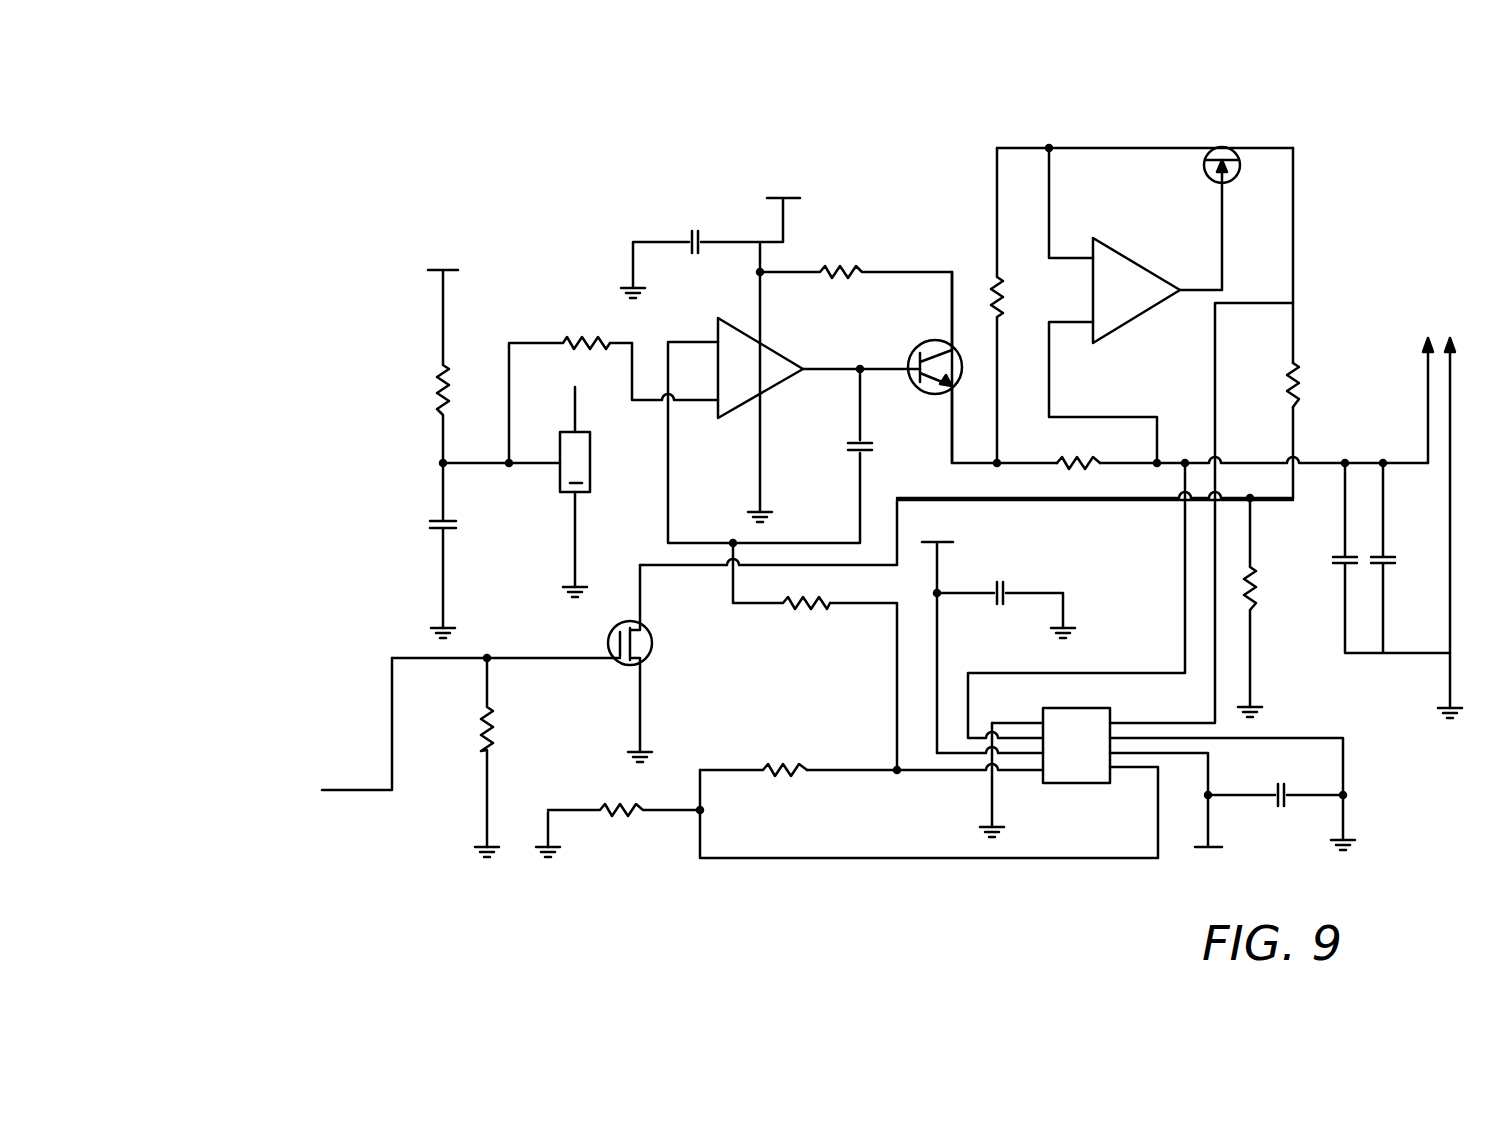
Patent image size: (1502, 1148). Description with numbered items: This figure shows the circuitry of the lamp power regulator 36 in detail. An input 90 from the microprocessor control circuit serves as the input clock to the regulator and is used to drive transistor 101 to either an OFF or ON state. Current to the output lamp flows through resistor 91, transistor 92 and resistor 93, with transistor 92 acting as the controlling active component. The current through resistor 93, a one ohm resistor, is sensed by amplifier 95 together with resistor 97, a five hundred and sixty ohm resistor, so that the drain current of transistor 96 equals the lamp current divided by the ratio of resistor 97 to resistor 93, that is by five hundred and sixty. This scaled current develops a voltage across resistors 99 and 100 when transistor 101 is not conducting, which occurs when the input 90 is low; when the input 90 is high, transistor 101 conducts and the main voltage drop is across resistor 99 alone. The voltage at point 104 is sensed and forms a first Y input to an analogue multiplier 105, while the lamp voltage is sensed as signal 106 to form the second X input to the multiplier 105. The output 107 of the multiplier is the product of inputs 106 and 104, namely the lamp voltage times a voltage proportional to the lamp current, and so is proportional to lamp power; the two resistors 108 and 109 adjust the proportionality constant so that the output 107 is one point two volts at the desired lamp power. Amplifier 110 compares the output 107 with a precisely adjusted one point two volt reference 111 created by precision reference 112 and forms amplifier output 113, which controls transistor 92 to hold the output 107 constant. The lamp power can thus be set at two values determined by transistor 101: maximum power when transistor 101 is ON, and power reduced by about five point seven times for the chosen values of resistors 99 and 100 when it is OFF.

The lamp power regulator 36 is at (822, 508).
The input 90 is at (357, 724).
The resistor 91 is at (856, 241).
The transistor 92 is at (928, 367).
The resistor 93 is at (1061, 464).
The amplifier 95 is at (1157, 263).
The transistor 96 is at (1234, 194).
The resistor 97 is at (996, 305).
The resistor 99 is at (1326, 348).
The resistor 100 is at (1280, 607).
The transistor 101 is at (675, 663).
The point 104 is at (1201, 513).
The analogue multiplier 105 is at (1081, 773).
The signal 106 is at (1076, 600).
The output 107 is at (925, 800).
The resistor 108 is at (778, 749).
The resistor 109 is at (628, 791).
The amplifier 110 is at (770, 430).
The reference 111 is at (665, 400).
The precision reference 112 is at (550, 492).
The amplifier output 113 is at (861, 340).